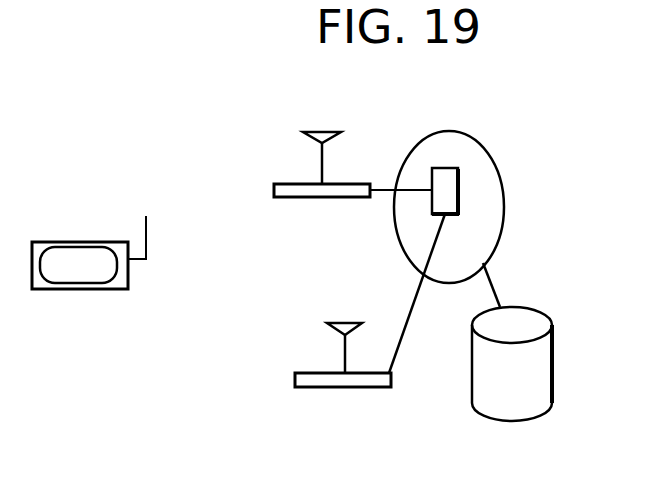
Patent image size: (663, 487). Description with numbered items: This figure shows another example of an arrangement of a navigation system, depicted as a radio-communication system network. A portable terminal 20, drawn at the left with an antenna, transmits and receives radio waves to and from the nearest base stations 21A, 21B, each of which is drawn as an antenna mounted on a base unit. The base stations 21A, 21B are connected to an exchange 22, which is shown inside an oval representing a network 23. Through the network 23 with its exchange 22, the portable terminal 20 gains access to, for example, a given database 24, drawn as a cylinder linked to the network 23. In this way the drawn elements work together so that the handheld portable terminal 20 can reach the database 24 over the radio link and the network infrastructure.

The portable terminal 20 is at (60, 290).
The base station 21A is at (312, 387).
The base station 21B is at (286, 197).
The exchange 22 is at (458, 181).
The network 23 is at (504, 218).
The database 24 is at (518, 417).